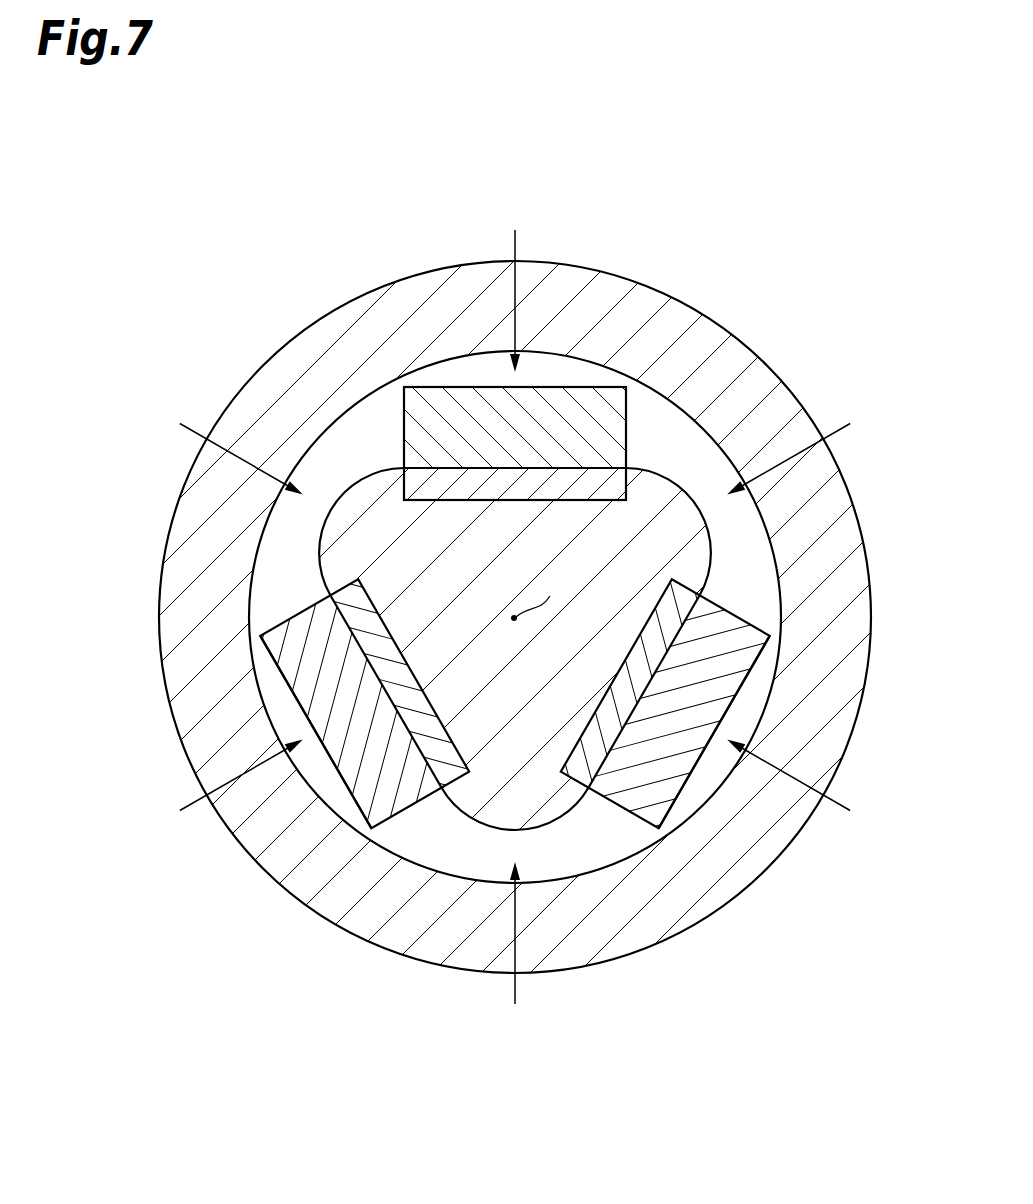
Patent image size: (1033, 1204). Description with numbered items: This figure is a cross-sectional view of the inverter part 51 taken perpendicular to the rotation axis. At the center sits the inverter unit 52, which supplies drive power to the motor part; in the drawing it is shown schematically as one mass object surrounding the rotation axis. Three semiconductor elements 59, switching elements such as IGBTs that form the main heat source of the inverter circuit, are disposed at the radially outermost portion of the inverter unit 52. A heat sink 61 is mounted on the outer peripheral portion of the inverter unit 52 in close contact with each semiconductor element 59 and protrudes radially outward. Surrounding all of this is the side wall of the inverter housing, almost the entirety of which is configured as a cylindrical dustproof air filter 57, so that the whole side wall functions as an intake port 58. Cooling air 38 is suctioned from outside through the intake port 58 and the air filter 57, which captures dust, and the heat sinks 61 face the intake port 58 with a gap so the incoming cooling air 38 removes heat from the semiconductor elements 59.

The inverter part 51 is at (728, 215).
The inverter unit 52 is at (516, 592).
The cooling air 38 is at (515, 318).
The air filter 57 is at (700, 895).
The intake port 58 is at (515, 617).
The semiconductor element 59 is at (447, 475).
The heat sink 61 is at (477, 400).